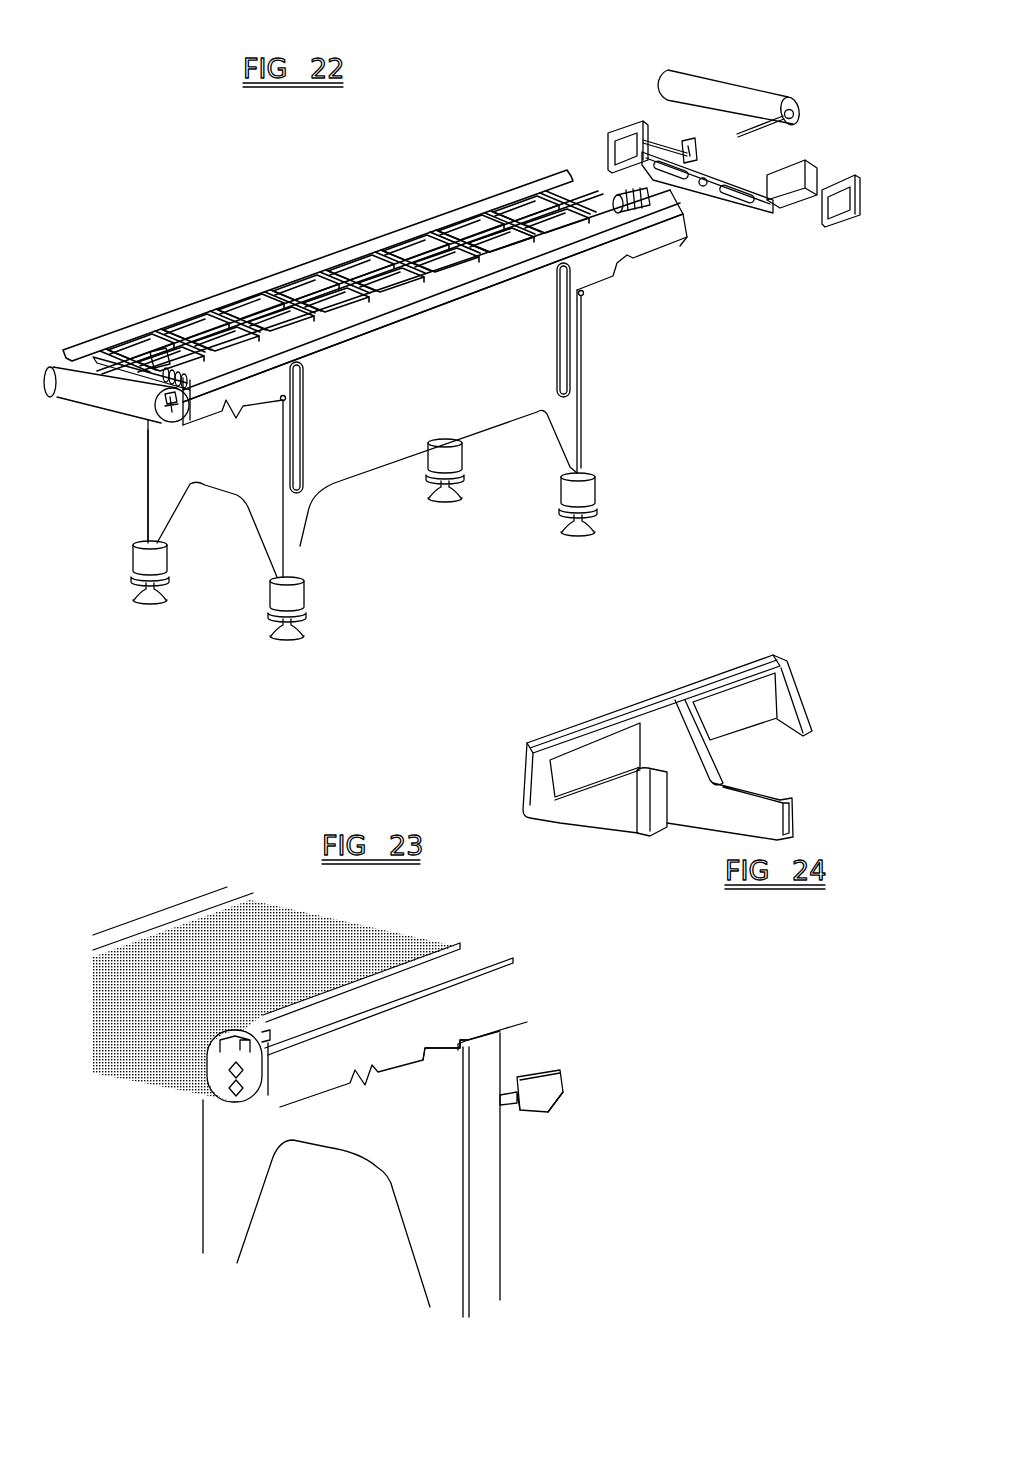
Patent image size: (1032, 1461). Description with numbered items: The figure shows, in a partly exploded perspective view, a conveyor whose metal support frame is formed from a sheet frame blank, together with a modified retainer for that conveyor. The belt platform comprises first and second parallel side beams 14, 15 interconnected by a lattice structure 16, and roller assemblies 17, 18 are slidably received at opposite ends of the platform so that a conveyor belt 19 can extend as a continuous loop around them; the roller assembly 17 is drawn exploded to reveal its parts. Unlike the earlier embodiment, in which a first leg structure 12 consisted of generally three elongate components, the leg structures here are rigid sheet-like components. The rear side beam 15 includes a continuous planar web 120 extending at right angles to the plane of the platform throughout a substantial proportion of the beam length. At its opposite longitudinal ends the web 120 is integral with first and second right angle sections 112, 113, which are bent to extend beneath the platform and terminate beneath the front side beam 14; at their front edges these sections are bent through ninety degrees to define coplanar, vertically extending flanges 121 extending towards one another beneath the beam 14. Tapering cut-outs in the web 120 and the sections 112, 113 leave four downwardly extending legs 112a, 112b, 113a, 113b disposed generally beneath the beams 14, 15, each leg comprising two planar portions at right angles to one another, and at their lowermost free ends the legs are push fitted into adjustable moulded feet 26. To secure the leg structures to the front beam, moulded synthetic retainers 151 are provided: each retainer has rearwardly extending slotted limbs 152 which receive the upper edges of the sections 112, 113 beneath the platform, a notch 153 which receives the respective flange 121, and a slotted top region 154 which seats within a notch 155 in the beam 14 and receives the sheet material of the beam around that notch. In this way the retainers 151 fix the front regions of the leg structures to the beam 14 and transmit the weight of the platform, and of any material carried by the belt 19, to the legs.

In FIG. 22, the first leg structure 12 is at (173, 571).
In FIG. 22, the first side beam 14 is at (222, 292).
In FIG. 23, the first side beam 14 is at (483, 995).
In FIG. 22, the second side beam 15 is at (610, 270).
In FIG. 22, the lattice structure 16 is at (478, 232).
In FIG. 22, the roller assembly 17 is at (828, 146).
In FIG. 23, the roller assembly 17 is at (140, 1062).
In FIG. 22, the roller assembly 18 is at (96, 428).
In FIG. 23, the conveyor belt 19 is at (227, 943).
In FIG. 22, the adjustable foot unit 26 is at (303, 601).
In FIG. 22, the right angle section 112 is at (568, 360).
In FIG. 23, the leg 112a is at (440, 1227).
In FIG. 22, the leg 112b is at (572, 443).
In FIG. 23, the leg 112b is at (230, 1190).
In FIG. 22, the right angle section 113 is at (213, 452).
In FIG. 22, the leg 113a is at (157, 514).
In FIG. 22, the leg 113b is at (303, 563).
In FIG. 22, the planar web 120 is at (487, 383).
In FIG. 22, the flange 121 is at (160, 342).
In FIG. 23, the flange 121 is at (490, 1160).
In FIG. 23, the retainer 151 is at (570, 1082).
In FIG. 24, the retainer 151 is at (609, 686).
In FIG. 23, the slotted limb 152 is at (510, 1090).
In FIG. 24, the slotted limb 152 is at (757, 780).
In FIG. 24, the notch 153 is at (663, 827).
In FIG. 24, the slotted top region 154 is at (768, 653).
In FIG. 23, the notch 155 is at (433, 1082).